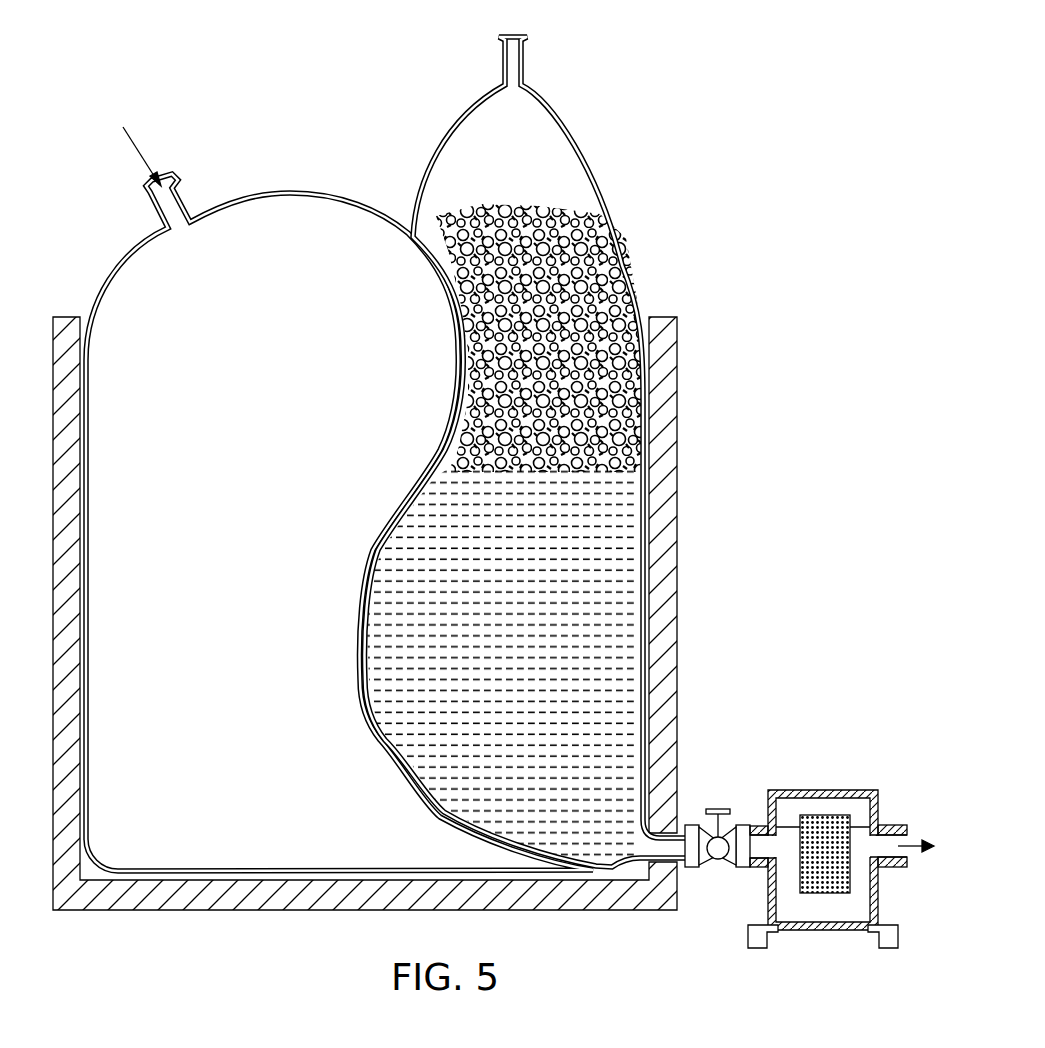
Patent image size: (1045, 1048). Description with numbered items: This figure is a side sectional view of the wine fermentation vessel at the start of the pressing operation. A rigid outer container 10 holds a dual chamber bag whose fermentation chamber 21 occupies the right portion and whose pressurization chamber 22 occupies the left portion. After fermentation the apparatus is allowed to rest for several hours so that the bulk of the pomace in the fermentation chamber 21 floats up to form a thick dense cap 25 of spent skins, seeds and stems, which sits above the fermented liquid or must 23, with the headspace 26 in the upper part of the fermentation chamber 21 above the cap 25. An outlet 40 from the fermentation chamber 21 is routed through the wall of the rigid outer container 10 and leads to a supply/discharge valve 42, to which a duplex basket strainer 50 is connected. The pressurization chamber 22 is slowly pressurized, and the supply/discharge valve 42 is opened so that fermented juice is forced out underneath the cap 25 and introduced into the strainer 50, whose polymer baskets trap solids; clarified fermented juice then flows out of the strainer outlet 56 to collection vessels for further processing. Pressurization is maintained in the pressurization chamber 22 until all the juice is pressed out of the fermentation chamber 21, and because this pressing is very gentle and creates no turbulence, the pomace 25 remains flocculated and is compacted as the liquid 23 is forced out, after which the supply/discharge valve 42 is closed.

The rigid outer container 10 is at (678, 400).
The fermentation chamber 21 is at (424, 160).
The pressurization chamber 22 is at (224, 205).
The fermenting must 23 is at (590, 571).
The cap 25 is at (598, 215).
The headspace 26 is at (547, 165).
The outlet 40 is at (689, 824).
The supply/discharge valve 42 is at (717, 861).
The duplex basket strainer 50 is at (790, 790).
The strainer outlet 56 is at (918, 836).